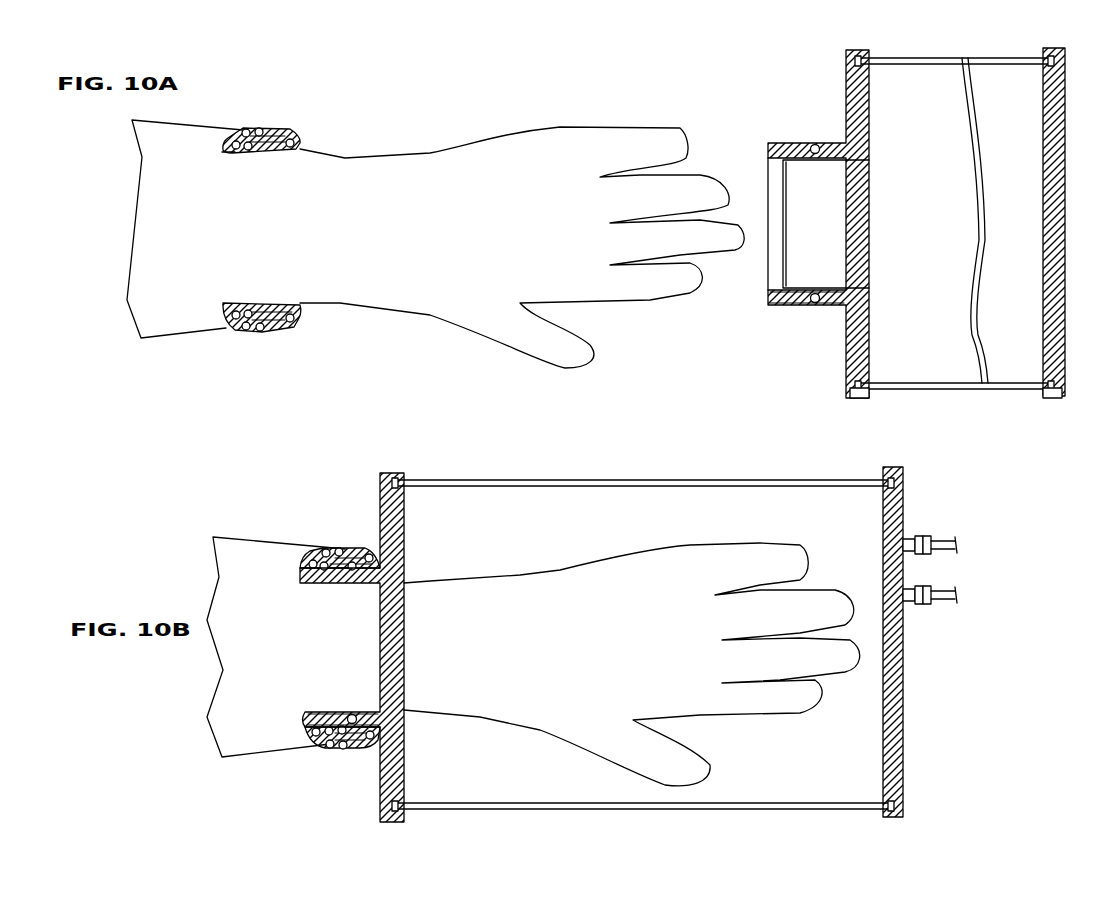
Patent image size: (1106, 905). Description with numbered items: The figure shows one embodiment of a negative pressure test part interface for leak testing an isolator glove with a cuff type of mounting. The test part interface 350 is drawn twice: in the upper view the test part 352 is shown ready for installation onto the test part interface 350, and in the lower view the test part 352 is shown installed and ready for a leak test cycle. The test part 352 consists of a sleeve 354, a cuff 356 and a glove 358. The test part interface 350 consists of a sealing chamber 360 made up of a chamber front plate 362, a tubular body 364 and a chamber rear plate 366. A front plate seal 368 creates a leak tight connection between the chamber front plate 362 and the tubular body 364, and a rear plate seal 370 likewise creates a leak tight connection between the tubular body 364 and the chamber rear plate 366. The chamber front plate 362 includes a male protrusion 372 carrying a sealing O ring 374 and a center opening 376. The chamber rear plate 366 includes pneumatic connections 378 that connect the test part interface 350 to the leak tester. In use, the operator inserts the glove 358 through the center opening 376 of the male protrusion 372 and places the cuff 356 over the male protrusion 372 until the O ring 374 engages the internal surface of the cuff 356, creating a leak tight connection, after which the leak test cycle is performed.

In FIG. 10A, the test part interface 350 is at (843, 54).
In FIG. 10B, the test part interface 350 is at (910, 660).
In FIG. 10A, the test part 352 is at (262, 126).
In FIG. 10B, the test part 352 is at (346, 552).
In FIG. 10A, the sleeve 354 is at (190, 338).
In FIG. 10B, the sleeve 354 is at (284, 758).
In FIG. 10A, the cuff 356 is at (272, 332).
In FIG. 10B, the cuff 356 is at (345, 749).
In FIG. 10A, the glove 358 is at (392, 318).
In FIG. 10B, the glove 358 is at (498, 572).
In FIG. 10A, the sealing chamber 360 is at (767, 190).
In FIG. 10A, the chamber front plate 362 is at (846, 104).
In FIG. 10B, the chamber front plate 362 is at (380, 520).
In FIG. 10A, the tubular body 364 is at (929, 388).
In FIG. 10B, the tubular body 364 is at (540, 480).
In FIG. 10A, the chamber rear plate 366 is at (1070, 397).
In FIG. 10B, the chamber rear plate 366 is at (907, 762).
In FIG. 10A, the front plate seal 368 is at (856, 393).
In FIG. 10B, the front plate seal 368 is at (392, 470).
In FIG. 10A, the rear plate seal 370 is at (1050, 390).
In FIG. 10B, the rear plate seal 370 is at (907, 803).
In FIG. 10A, the male protrusion 372 is at (788, 297).
In FIG. 10B, the male protrusion 372 is at (312, 718).
In FIG. 10A, the sealing O ring 374 is at (812, 307).
In FIG. 10B, the sealing O ring 374 is at (350, 712).
In FIG. 10A, the center opening 376 is at (767, 280).
In FIG. 10B, the pneumatic connections 378 is at (960, 598).